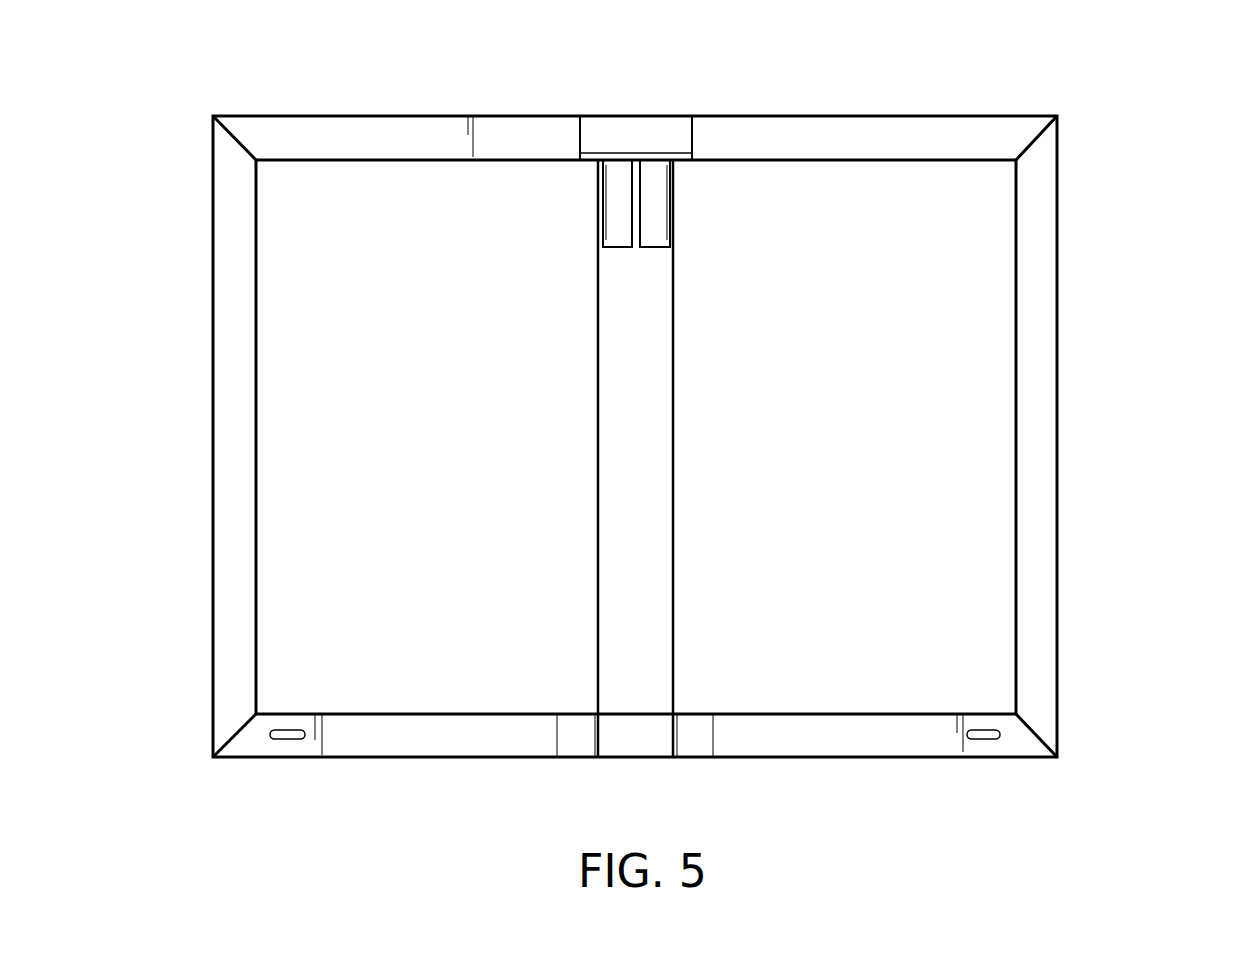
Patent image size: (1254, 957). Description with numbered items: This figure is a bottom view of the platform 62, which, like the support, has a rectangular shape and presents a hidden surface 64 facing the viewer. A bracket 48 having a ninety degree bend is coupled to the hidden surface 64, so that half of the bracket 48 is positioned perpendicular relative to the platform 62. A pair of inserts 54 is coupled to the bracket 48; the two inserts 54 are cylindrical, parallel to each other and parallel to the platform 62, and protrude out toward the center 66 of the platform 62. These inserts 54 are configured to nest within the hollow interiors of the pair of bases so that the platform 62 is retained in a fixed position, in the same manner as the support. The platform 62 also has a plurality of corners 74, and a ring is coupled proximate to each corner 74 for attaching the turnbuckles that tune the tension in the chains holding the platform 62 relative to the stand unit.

The bracket 48 is at (652, 134).
The pair of inserts 54 is at (620, 236).
The platform 62 is at (1138, 163).
The hidden surface 64 is at (1035, 410).
The center 66 is at (628, 613).
The corners 74 is at (232, 150).